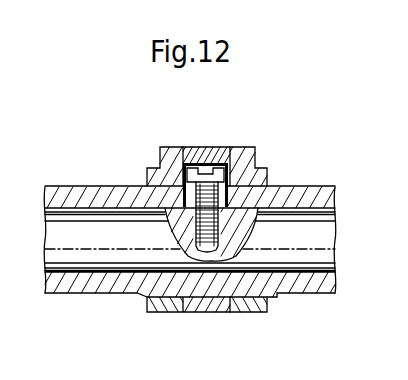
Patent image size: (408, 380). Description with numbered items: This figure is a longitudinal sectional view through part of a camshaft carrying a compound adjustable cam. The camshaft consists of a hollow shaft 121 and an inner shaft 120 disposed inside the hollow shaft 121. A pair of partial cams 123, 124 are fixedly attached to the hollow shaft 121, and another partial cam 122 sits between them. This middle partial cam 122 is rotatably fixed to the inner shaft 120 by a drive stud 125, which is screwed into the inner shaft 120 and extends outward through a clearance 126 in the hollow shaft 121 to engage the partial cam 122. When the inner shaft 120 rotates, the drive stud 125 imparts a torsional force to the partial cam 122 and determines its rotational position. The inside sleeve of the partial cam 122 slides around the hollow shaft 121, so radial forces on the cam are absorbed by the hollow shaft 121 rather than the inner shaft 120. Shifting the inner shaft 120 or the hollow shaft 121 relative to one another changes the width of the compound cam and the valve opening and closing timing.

The inner shaft 120 is at (83, 257).
The hollow shaft 121 is at (126, 277).
The partial cam 122 is at (221, 146).
The partial cam 123 is at (168, 308).
The partial cam 124 is at (250, 307).
The drive stud 125 is at (163, 166).
The clearance 126 is at (262, 170).